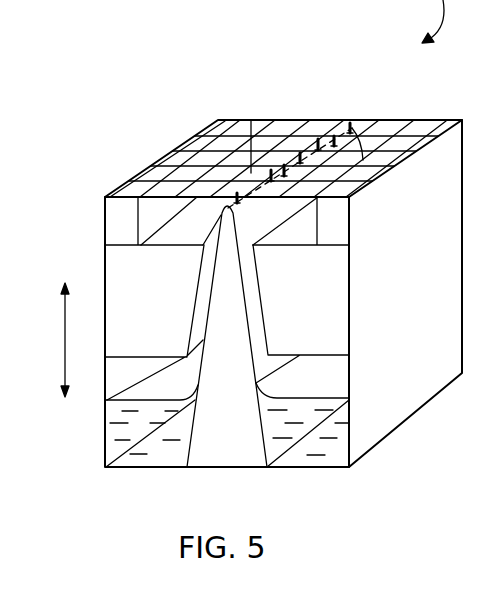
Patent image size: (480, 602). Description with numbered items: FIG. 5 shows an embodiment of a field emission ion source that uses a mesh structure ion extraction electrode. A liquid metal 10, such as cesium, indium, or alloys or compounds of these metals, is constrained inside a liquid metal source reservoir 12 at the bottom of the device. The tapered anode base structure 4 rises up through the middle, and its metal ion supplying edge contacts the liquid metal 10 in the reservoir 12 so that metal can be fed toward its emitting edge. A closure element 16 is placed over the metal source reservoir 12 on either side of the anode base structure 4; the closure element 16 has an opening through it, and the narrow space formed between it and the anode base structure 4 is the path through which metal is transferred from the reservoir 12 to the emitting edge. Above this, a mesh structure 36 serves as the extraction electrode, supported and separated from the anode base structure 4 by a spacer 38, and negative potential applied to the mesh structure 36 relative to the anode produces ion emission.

The mesh structure 36 is at (298, 118).
The spacer 38 is at (115, 223).
The anode base structure 4 is at (230, 312).
The closure element 16 is at (163, 312).
The liquid metal 10 is at (117, 432).
The liquid metal source reservoir 12 is at (176, 444).